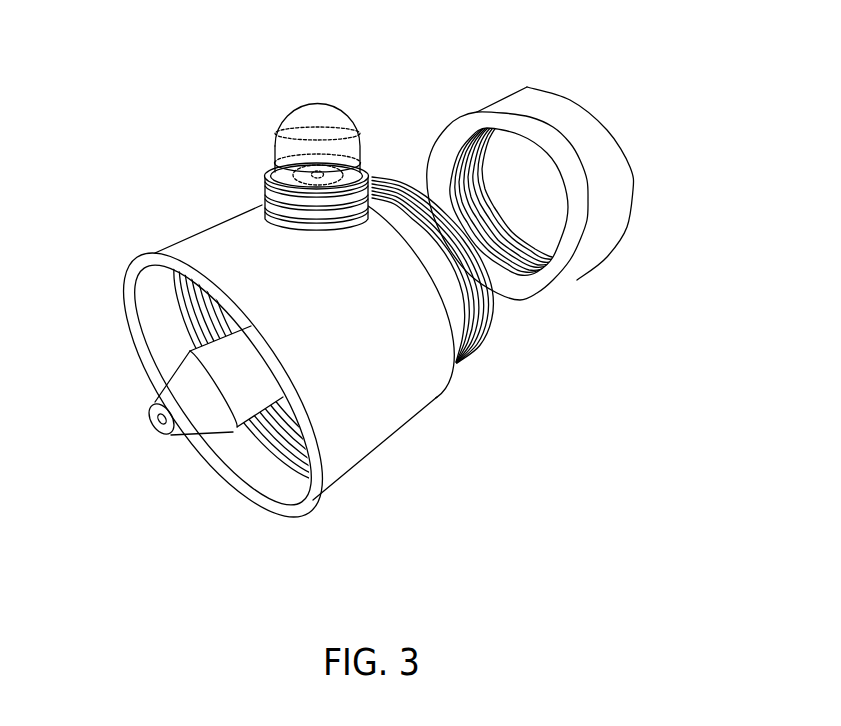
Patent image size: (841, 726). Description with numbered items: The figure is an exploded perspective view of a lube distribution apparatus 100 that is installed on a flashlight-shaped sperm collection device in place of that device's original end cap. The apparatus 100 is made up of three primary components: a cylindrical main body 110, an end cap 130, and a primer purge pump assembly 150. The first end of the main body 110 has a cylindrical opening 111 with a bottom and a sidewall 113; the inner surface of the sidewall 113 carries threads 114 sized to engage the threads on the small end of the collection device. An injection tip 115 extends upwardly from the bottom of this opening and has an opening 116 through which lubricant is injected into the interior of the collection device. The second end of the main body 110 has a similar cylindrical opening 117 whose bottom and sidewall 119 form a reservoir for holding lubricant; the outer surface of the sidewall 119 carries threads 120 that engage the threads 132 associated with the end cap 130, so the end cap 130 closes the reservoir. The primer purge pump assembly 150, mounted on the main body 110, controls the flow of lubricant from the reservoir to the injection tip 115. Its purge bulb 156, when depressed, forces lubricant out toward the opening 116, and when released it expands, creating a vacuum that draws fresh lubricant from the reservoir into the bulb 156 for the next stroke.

The lube distribution apparatus 100 is at (385, 300).
The main body 110 is at (437, 397).
The cylindrical opening 111 is at (262, 491).
The sidewall 113 is at (232, 483).
The threads 114 is at (248, 440).
The injection tip 115 is at (168, 397).
The opening 116 is at (147, 421).
The cylindrical opening 117 is at (520, 250).
The sidewall 119 is at (482, 347).
The threads 120 is at (502, 304).
The end cap 130 is at (580, 193).
The threads 132 is at (540, 240).
The primer purge pump assembly 150 is at (346, 98).
The purge bulb 156 is at (297, 118).